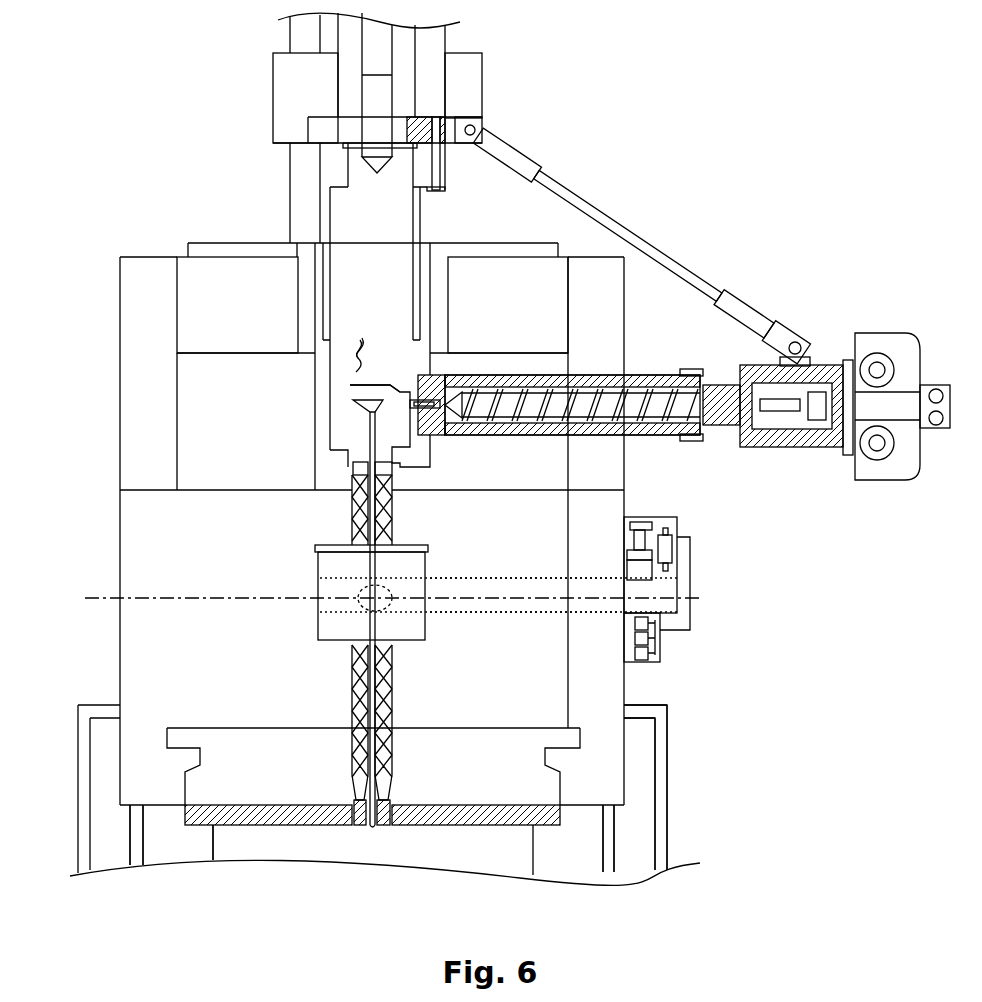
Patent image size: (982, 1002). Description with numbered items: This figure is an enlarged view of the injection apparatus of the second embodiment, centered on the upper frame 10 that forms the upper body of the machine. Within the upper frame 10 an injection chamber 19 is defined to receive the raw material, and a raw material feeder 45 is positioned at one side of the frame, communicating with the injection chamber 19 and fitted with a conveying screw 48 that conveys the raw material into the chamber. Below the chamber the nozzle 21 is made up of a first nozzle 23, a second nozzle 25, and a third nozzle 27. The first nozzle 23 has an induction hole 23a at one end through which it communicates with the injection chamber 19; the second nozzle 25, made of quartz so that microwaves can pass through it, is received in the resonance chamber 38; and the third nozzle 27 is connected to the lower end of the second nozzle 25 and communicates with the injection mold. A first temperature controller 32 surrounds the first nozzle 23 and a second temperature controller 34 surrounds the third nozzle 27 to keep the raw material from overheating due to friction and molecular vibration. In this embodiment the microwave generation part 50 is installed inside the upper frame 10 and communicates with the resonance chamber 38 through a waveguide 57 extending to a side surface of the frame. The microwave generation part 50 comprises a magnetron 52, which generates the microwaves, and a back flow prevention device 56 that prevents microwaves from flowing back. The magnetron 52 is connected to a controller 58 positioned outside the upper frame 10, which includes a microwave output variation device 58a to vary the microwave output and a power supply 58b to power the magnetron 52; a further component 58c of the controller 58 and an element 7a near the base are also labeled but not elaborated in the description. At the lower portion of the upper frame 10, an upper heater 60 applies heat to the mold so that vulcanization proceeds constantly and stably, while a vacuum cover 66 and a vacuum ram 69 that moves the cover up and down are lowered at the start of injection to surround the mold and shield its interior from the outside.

The upper frame 10 is at (120, 243).
The injection chamber 19 is at (355, 350).
The induction hole 23a is at (400, 397).
The nozzle 21 is at (362, 419).
The first nozzle 23 is at (352, 478).
The first temperature controller 32 is at (357, 503).
The second nozzle 25 is at (373, 575).
The resonance chamber 38 is at (340, 623).
The second temperature controller 34 is at (355, 680).
The third nozzle 27 is at (372, 693).
The base plate 7a is at (188, 805).
The upper heater 60 is at (222, 825).
The conveying screw 48 is at (668, 408).
The raw material feeder 45 is at (793, 458).
The microwave generation part 50 is at (652, 512).
The back flow prevention device 56 is at (630, 527).
The magnetron 52 is at (658, 541).
The microwave output variation device 58a is at (635, 624).
The power supply 58b is at (635, 638).
The switch c 58c is at (635, 654).
The controller 58 is at (664, 650).
The waveguide 57 is at (513, 612).
The vacuum cover 66 is at (660, 797).
The vacuum ram 69 is at (607, 832).